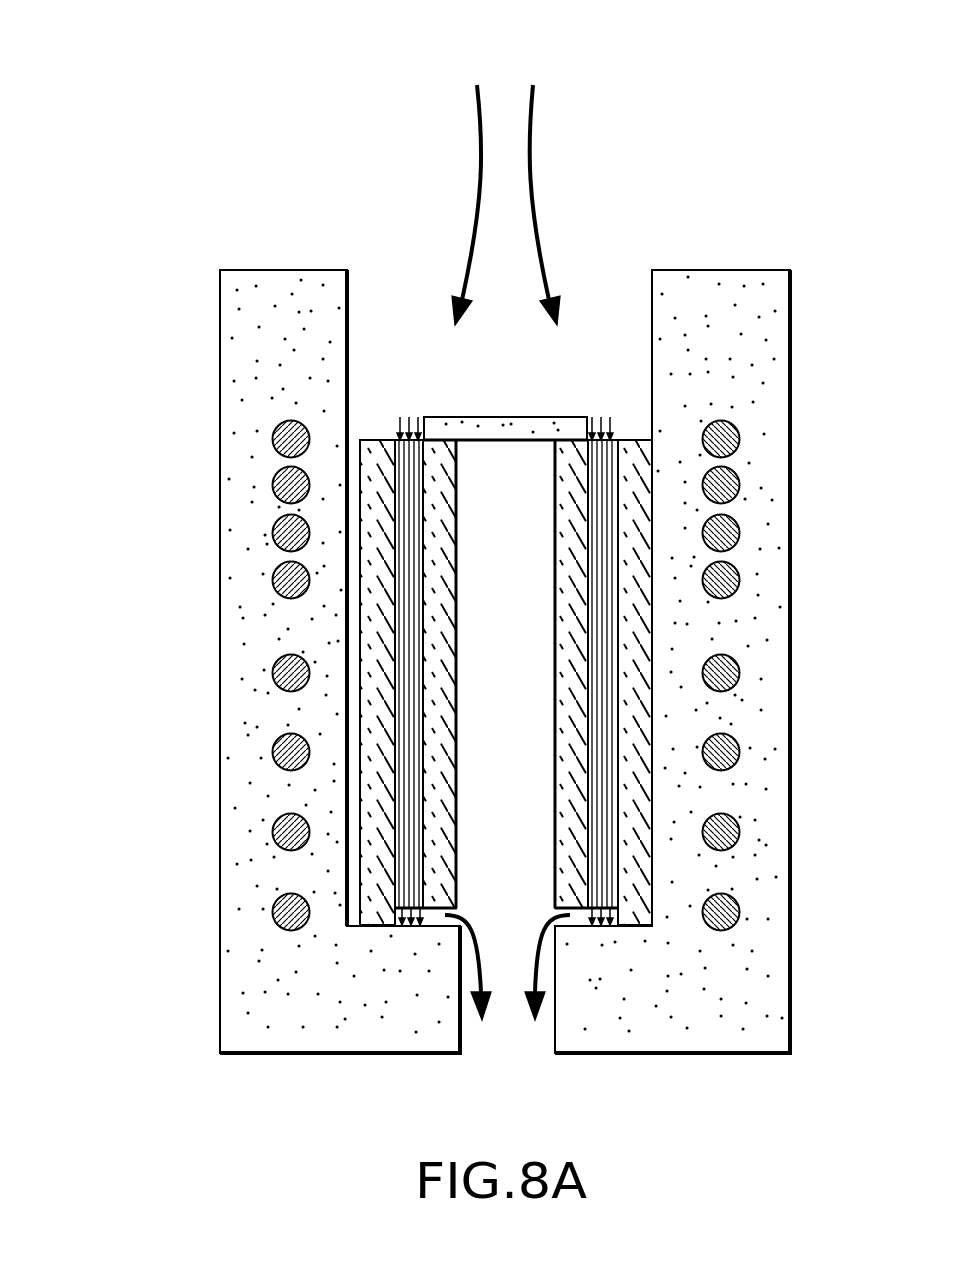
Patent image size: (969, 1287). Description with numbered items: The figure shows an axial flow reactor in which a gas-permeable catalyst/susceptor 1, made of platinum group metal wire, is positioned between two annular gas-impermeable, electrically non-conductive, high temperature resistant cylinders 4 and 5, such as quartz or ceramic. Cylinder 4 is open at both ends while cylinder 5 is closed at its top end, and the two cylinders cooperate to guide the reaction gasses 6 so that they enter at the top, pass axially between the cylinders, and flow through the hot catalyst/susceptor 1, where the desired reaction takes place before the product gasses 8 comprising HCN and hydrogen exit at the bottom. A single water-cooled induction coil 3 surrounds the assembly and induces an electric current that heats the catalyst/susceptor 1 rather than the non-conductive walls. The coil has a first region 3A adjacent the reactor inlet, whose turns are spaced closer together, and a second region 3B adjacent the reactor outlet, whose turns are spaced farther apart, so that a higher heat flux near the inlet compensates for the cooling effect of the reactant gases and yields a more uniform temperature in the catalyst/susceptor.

The catalyst/susceptor 1 is at (603, 748).
The induction coil 3 is at (738, 667).
The first region 3A is at (267, 420).
The second region 3B is at (268, 657).
The cylinder 4 is at (633, 563).
The cylinder 5 is at (572, 662).
The reaction gasses 6 is at (533, 83).
The product gasses 8 is at (482, 1020).